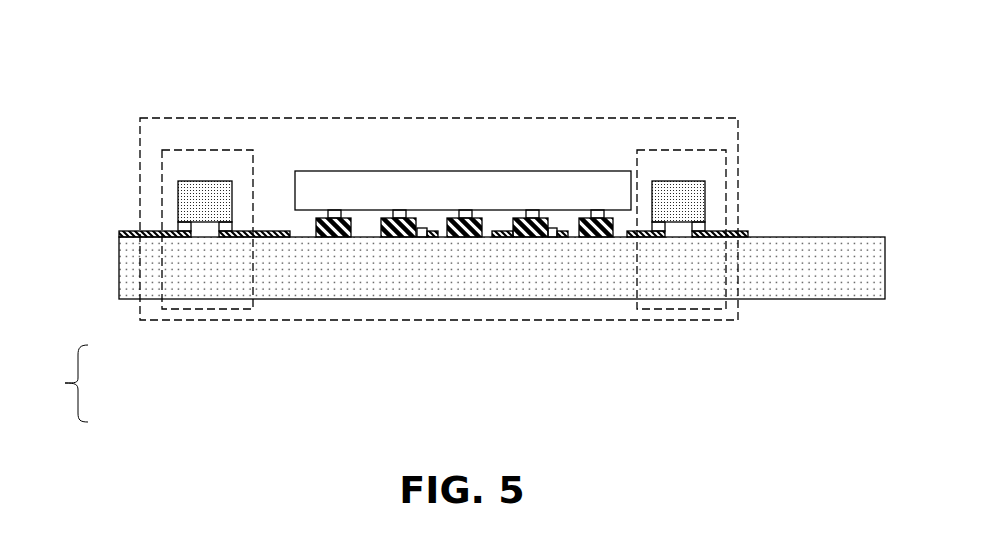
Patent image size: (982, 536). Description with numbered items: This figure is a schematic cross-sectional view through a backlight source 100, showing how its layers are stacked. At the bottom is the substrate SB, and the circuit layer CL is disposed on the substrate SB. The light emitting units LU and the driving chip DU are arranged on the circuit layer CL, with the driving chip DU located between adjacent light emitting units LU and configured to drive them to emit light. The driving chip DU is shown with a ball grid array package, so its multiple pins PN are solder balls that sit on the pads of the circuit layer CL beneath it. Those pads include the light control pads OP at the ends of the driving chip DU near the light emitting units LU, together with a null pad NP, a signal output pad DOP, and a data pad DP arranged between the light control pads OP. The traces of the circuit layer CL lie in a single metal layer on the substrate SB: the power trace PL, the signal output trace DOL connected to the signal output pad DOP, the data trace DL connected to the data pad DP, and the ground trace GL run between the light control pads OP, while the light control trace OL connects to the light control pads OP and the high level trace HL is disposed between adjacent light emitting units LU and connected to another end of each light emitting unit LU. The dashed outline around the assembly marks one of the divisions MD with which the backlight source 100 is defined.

The backlight source 100 is at (97, 63).
The substrate SB is at (119, 266).
The division MD is at (140, 135).
The light emitting unit LU is at (162, 188).
The driving chip DU is at (367, 168).
The pin PN is at (328, 217).
The light control pad OP is at (345, 238).
The null pad NP is at (407, 238).
The signal output pad DOP is at (457, 238).
The data pad DP is at (550, 237).
The power trace PL is at (432, 230).
The signal output trace DOL is at (470, 237).
The data trace DL is at (510, 230).
The ground trace GL is at (560, 230).
The light control trace OL is at (272, 237).
The high level trace HL is at (118, 300).
The circuit layer CL is at (62, 383).